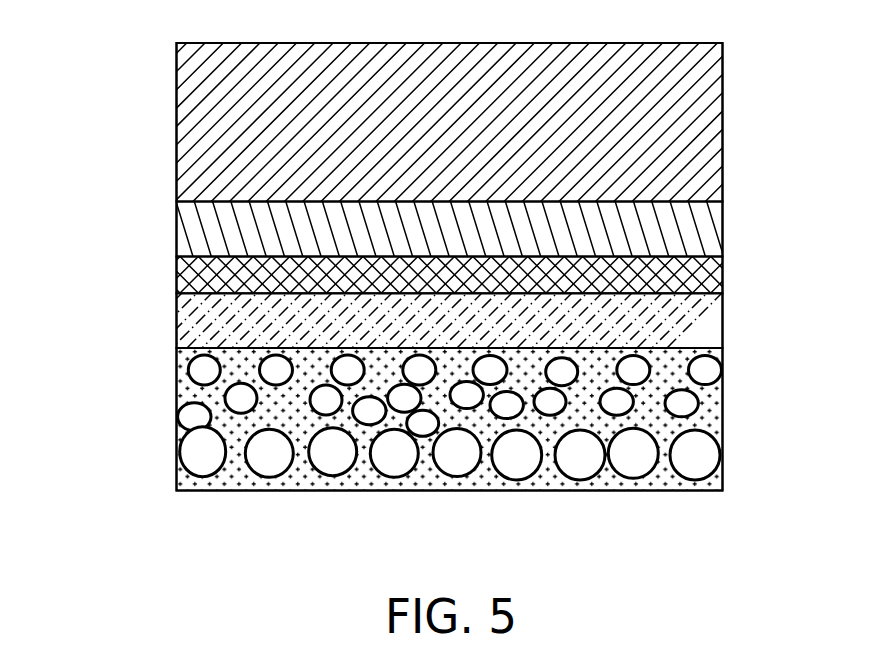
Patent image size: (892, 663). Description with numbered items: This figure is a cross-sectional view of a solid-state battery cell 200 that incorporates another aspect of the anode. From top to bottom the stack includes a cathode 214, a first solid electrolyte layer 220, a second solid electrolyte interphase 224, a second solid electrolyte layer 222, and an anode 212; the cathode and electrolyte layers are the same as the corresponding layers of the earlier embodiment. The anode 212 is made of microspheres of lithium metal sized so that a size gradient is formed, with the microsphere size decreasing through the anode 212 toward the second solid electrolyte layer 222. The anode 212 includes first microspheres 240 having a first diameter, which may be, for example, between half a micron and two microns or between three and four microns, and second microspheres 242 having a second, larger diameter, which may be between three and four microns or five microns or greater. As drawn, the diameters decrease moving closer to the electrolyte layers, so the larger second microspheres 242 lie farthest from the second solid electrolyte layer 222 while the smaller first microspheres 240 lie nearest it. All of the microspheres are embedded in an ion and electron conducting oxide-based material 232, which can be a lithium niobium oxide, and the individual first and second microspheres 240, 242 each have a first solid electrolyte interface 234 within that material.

The solid-state battery cell 200 is at (105, 42).
The cathode 214 is at (722, 126).
The first solid electrolyte layer 220 is at (722, 226).
The second solid electrolyte interphase 224 is at (722, 276).
The second solid electrolyte layer 222 is at (722, 326).
The anode 212 is at (450, 446).
The ion and electron conducting oxide-based material 232 is at (707, 412).
The first solid electrolyte interface 234 is at (490, 486).
The first microspheres 240 is at (242, 397).
The second microspheres 242 is at (270, 455).